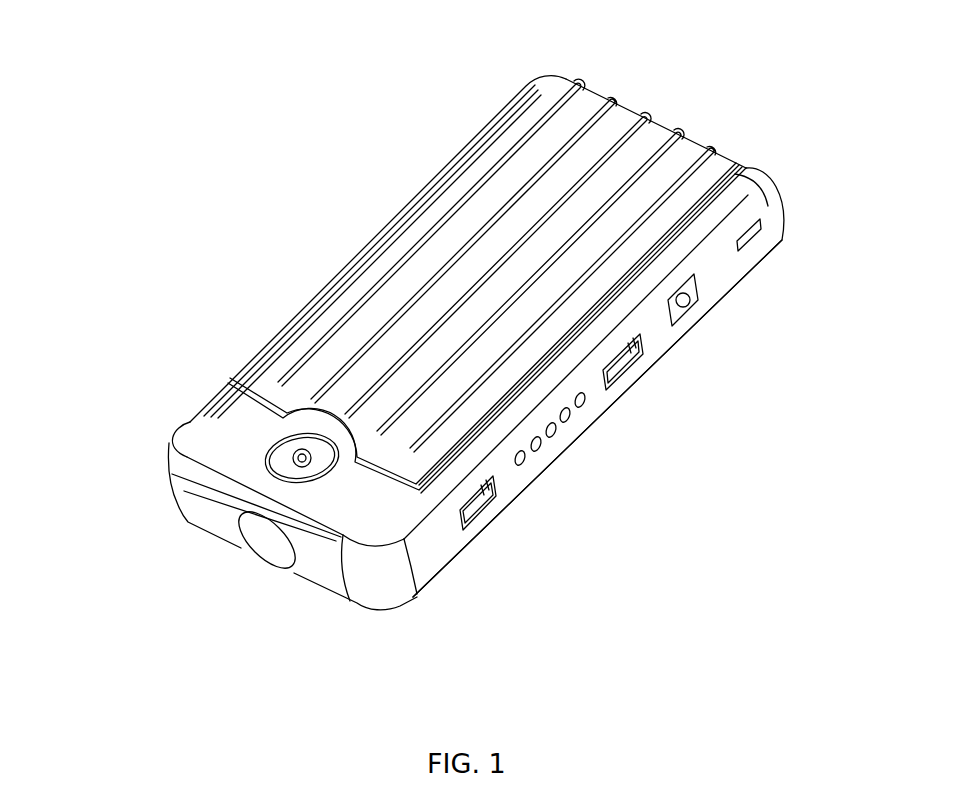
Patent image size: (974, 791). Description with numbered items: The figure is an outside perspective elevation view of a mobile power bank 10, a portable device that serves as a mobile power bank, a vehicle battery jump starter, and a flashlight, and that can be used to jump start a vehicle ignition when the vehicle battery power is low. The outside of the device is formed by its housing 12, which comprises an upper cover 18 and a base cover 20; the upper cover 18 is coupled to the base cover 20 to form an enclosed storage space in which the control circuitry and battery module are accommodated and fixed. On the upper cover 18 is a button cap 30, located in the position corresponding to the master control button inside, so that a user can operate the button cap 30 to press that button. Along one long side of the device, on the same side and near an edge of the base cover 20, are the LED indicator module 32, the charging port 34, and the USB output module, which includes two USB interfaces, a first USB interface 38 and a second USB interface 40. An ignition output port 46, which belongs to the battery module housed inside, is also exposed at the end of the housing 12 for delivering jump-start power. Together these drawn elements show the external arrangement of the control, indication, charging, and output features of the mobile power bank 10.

The mobile power bank 10 is at (300, 194).
The housing 12 is at (320, 307).
The upper cover 18 is at (617, 162).
The base cover 20 is at (458, 568).
The button cap 30 is at (297, 438).
The LED indicator module 32 is at (538, 445).
The charging port 34 is at (676, 295).
The first USB interface 38 is at (478, 497).
The second USB interface 40 is at (620, 366).
The ignition output port 46 is at (755, 232).